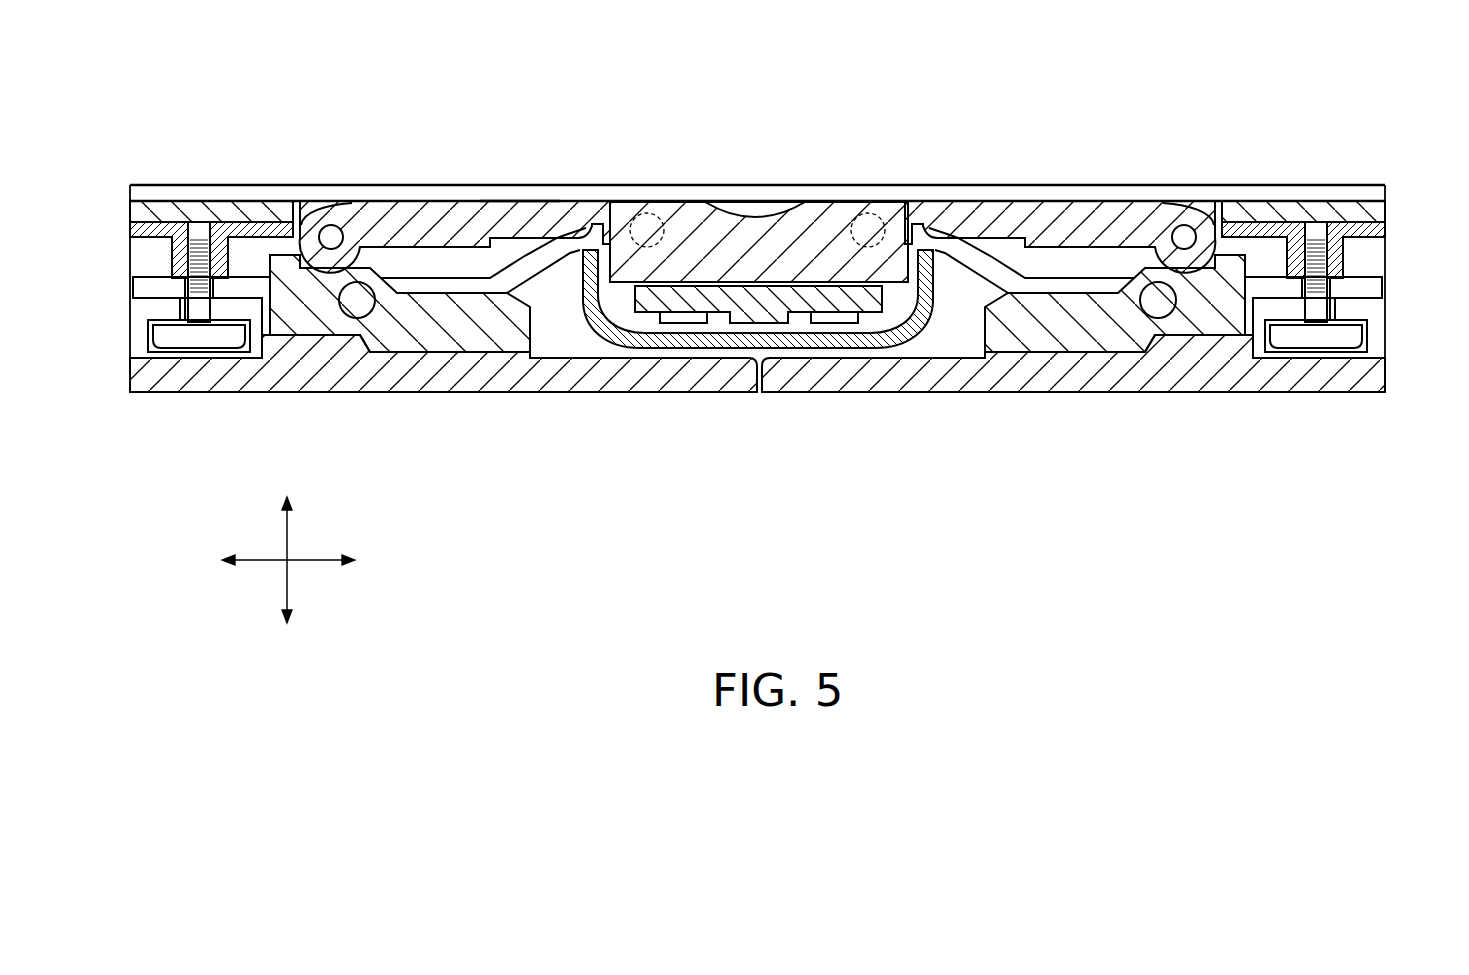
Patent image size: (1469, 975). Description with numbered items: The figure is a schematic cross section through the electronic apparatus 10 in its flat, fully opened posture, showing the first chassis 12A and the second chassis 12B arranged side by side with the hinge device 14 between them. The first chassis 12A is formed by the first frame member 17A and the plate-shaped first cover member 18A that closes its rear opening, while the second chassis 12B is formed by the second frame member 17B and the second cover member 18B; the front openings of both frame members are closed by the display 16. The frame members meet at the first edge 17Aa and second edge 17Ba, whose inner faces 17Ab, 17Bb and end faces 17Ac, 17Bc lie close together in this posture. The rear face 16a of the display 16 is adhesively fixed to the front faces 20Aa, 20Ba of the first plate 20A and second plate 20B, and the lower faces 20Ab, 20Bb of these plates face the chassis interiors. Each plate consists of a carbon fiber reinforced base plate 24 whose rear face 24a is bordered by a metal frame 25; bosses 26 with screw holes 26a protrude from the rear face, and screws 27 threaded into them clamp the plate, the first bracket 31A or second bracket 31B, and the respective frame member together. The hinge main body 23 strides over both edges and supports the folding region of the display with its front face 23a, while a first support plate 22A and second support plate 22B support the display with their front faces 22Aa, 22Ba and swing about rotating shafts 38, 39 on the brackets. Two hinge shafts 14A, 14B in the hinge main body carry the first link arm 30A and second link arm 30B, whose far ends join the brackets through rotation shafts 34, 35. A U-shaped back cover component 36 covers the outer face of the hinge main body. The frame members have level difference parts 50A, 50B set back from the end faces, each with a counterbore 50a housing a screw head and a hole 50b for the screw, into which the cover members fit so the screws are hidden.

The electronic apparatus 10 is at (140, 54).
The first chassis 12A is at (467, 372).
The second chassis 12B is at (1044, 372).
The hinge device 14 is at (606, 352).
The first hinge shaft 14A is at (652, 222).
The second hinge shaft 14B is at (862, 222).
The display 16 is at (358, 178).
The rear face 16a is at (513, 198).
The first frame member 17A is at (518, 375).
The first edge 17Aa is at (700, 393).
The inner face 17Ab is at (640, 362).
The end face 17Ac is at (754, 375).
The second frame member 17B is at (987, 375).
The second edge 17Ba is at (810, 393).
The inner face 17Bb is at (850, 362).
The end face 17Bc is at (764, 375).
The first cover member 18A is at (210, 345).
The second cover member 18B is at (1305, 345).
The first plate 20A is at (201, 118).
The front face 20Aa is at (252, 225).
The first fixing unit side surface 20Ab is at (280, 232).
The second plate 20B is at (1400, 262).
The front face 20Ba is at (1250, 230).
The second fixing unit side surface 20Bb is at (1227, 235).
The first support plate 22A is at (442, 228).
The front face 22Aa is at (392, 204).
The second support plate 22B is at (1067, 228).
The front face 22Ba is at (1035, 204).
The hinge main body 23 is at (759, 217).
The front face 23a is at (703, 205).
The base plate 24 is at (185, 212).
The rear face 24a is at (132, 232).
The metal frame 25 is at (150, 212).
The boss 26 is at (172, 262).
The screw hole 26a is at (214, 232).
The screw 27 is at (215, 354).
The first link arm 30A is at (530, 268).
The second link arm 30B is at (985, 268).
The first bracket 31A is at (410, 318).
The second bracket 31B is at (1105, 318).
The rotation shaft 34 is at (357, 319).
The rotation shaft 35 is at (1158, 319).
The back cover component 36 is at (678, 380).
The rotating shaft 38 is at (331, 237).
The rotating shaft 39 is at (1184, 237).
The first level difference part 50A is at (262, 315).
The second level difference part 50B is at (1253, 315).
The counterbore 50a is at (143, 352).
The hole 50b is at (178, 322).